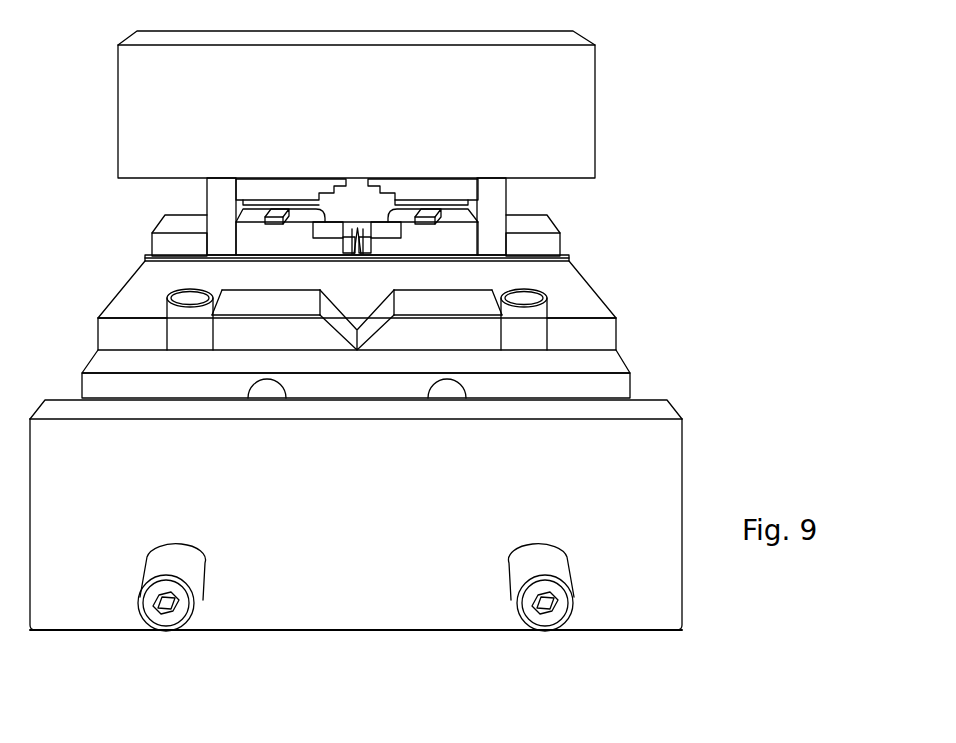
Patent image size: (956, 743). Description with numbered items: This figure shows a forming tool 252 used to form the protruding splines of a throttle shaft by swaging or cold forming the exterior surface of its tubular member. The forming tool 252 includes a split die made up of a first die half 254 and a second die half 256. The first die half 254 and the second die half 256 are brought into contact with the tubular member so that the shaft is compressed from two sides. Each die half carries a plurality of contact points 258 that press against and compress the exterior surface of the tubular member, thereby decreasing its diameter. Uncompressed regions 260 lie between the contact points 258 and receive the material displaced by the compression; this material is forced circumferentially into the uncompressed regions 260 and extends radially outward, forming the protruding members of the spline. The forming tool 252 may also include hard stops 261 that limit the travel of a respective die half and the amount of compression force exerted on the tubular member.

The forming tool 252 is at (677, 248).
The first die half 254 is at (207, 195).
The second die half 256 is at (142, 250).
The contact points 258 is at (335, 186).
The uncompressed regions 260 is at (378, 186).
The hard stops 261 is at (432, 213).